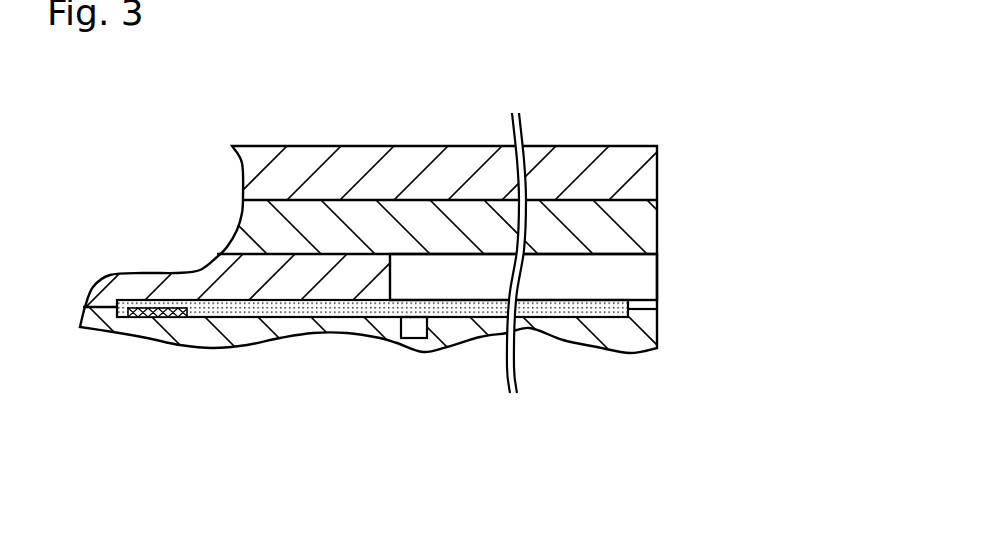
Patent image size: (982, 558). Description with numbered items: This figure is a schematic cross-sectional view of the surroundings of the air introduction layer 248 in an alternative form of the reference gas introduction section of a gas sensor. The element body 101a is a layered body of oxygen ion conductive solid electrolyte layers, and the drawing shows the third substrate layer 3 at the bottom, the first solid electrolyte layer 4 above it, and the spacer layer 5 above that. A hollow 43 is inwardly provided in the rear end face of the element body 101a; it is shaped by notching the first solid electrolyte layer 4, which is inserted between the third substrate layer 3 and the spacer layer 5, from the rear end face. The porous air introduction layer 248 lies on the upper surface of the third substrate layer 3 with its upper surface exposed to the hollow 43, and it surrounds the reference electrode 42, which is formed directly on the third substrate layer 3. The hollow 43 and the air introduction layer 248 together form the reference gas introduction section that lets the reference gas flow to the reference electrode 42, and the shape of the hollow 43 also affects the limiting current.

The element body 101a is at (645, 124).
The spacer layer 5 is at (651, 211).
The first solid electrolyte layer 4 is at (200, 270).
The reference electrode 42 is at (180, 304).
The hollow 43 is at (652, 282).
The air introduction layer 248 is at (629, 304).
The third substrate layer 3 is at (651, 322).